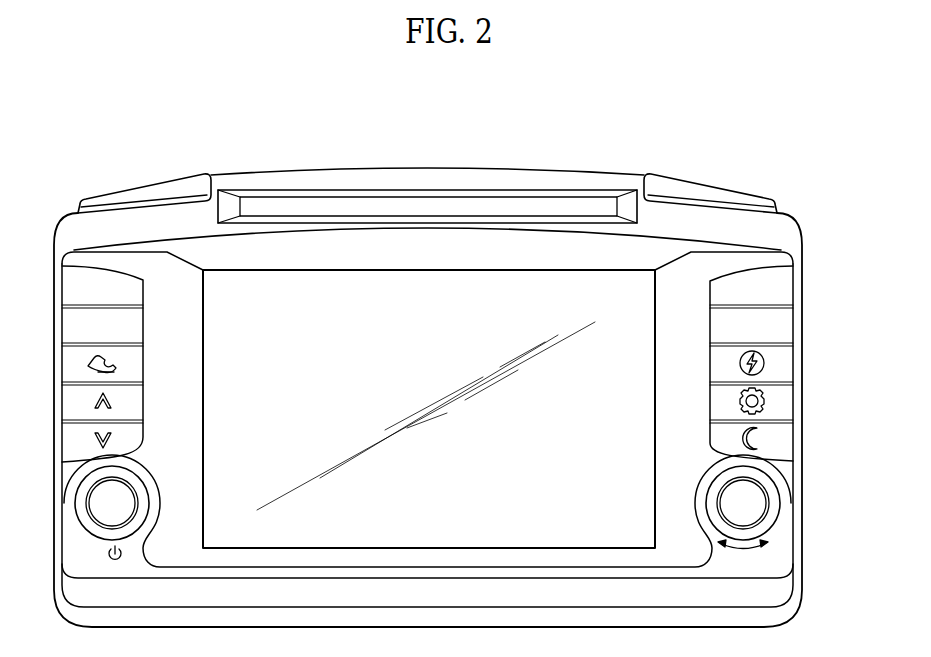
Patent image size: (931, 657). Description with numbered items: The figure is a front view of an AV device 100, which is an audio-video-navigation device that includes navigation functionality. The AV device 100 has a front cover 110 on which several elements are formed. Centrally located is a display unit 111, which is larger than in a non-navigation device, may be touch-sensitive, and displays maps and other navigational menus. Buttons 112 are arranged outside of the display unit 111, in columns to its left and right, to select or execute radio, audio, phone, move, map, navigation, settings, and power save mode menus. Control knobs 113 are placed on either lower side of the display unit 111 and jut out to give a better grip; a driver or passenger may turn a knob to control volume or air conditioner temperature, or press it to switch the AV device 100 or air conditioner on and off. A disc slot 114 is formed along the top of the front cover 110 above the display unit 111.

The AV device 100 is at (244, 110).
The front cover 110 is at (517, 170).
The display unit 111 is at (447, 277).
The buttons 112 is at (812, 267).
The control knobs 113 is at (760, 497).
The disc slot 114 is at (299, 206).